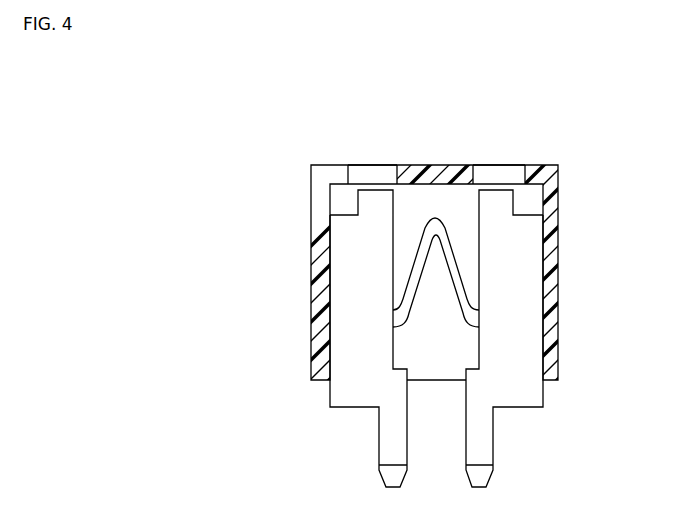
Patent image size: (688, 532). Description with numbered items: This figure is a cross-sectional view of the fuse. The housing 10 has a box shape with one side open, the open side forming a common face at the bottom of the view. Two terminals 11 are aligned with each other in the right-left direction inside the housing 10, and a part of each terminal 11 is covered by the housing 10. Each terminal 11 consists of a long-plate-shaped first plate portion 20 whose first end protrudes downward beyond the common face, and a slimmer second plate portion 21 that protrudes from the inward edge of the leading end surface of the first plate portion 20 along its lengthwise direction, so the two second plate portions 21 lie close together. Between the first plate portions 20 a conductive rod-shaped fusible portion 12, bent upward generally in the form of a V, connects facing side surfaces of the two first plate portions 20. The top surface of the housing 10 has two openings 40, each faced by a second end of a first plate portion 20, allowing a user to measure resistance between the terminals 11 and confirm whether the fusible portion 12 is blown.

The housing 10 is at (559, 195).
The terminal 11 is at (327, 472).
The fusible portion 12 is at (432, 222).
The first plate portion 20 is at (333, 337).
The second plate portion 21 is at (379, 426).
The opening 40 is at (363, 168).